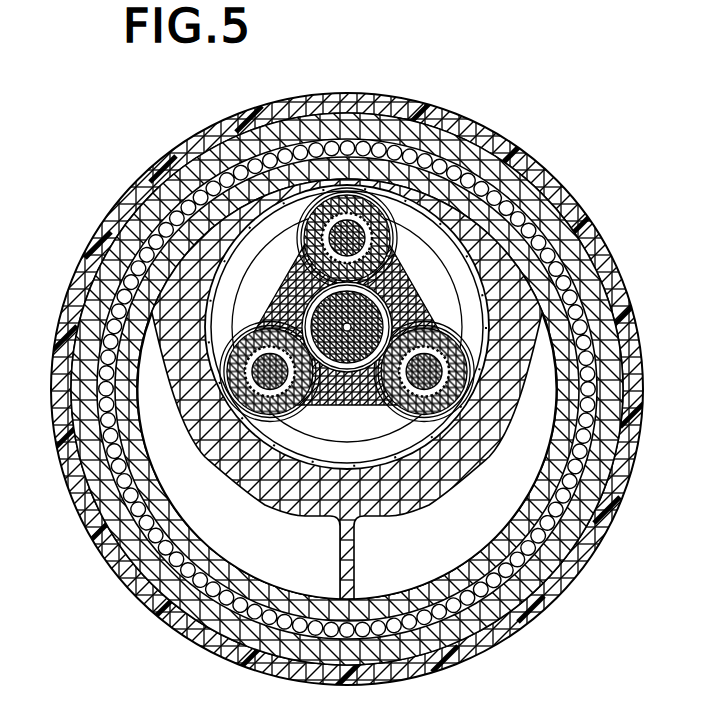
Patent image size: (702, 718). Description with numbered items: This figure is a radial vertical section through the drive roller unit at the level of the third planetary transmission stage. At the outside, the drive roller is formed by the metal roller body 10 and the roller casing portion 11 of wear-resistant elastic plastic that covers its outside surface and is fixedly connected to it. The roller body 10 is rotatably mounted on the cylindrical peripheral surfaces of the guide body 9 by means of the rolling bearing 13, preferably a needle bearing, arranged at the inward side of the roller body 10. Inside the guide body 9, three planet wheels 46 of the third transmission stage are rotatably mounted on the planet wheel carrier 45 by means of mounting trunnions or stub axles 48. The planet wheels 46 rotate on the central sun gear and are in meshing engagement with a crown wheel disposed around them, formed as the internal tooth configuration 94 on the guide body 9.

The guide body 9 is at (530, 287).
The roller body 10 is at (104, 250).
The roller casing portion 11 is at (117, 217).
The rolling bearing 13 is at (97, 322).
The planet wheel carrier 45 is at (480, 267).
The planet wheels 46 is at (330, 205).
The mounting trunnions or stub axles 48 is at (303, 203).
The internal tooth configuration 94 is at (413, 493).